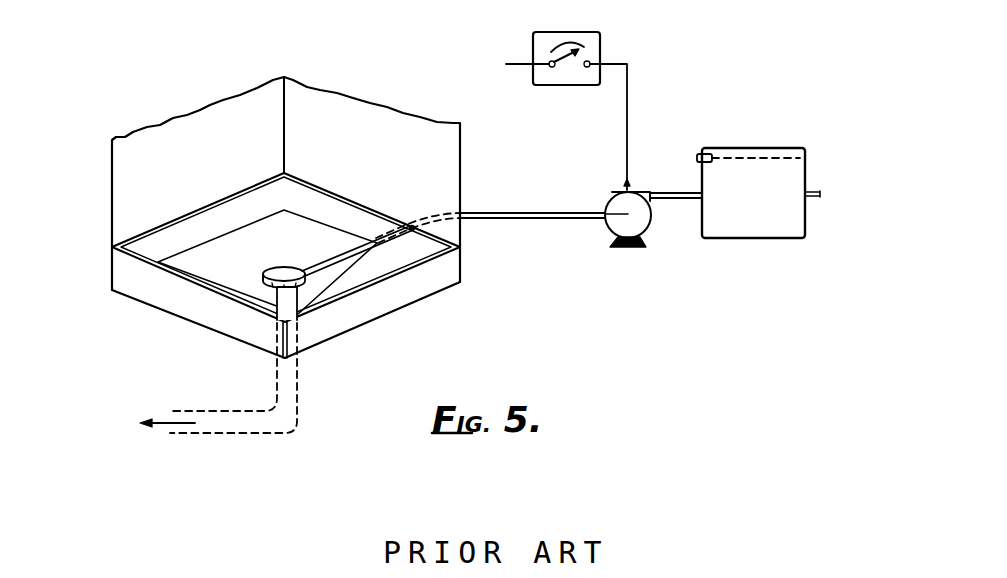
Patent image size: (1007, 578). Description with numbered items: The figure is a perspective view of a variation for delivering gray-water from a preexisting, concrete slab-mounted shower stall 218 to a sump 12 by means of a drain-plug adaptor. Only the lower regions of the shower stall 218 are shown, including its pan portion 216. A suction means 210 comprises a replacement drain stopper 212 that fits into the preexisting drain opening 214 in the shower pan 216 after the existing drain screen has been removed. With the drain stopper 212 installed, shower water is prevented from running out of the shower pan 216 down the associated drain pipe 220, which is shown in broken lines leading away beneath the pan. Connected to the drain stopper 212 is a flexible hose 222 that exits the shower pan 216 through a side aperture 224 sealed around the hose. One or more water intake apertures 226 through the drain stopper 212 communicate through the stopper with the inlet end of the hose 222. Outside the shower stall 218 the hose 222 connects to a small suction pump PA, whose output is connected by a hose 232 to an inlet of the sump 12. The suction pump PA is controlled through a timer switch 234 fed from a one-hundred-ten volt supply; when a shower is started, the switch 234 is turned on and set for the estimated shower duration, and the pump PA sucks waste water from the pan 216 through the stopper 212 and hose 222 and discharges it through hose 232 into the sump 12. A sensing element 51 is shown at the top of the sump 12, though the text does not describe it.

The shower stall 218 is at (213, 96).
The pan portion 216 is at (408, 295).
The drain opening 214 is at (315, 306).
The suction means 210 is at (278, 262).
The replacement drain stopper 212 is at (262, 273).
The water intake apertures 226 is at (283, 308).
The drain pipe 220 is at (248, 434).
The flexible hose 222 is at (331, 260).
The side aperture 224 is at (383, 236).
The suction pump PA is at (608, 200).
The timer switch 234 is at (600, 42).
The hose 232 is at (680, 192).
The sump 12 is at (736, 240).
The sensor 51 is at (698, 157).